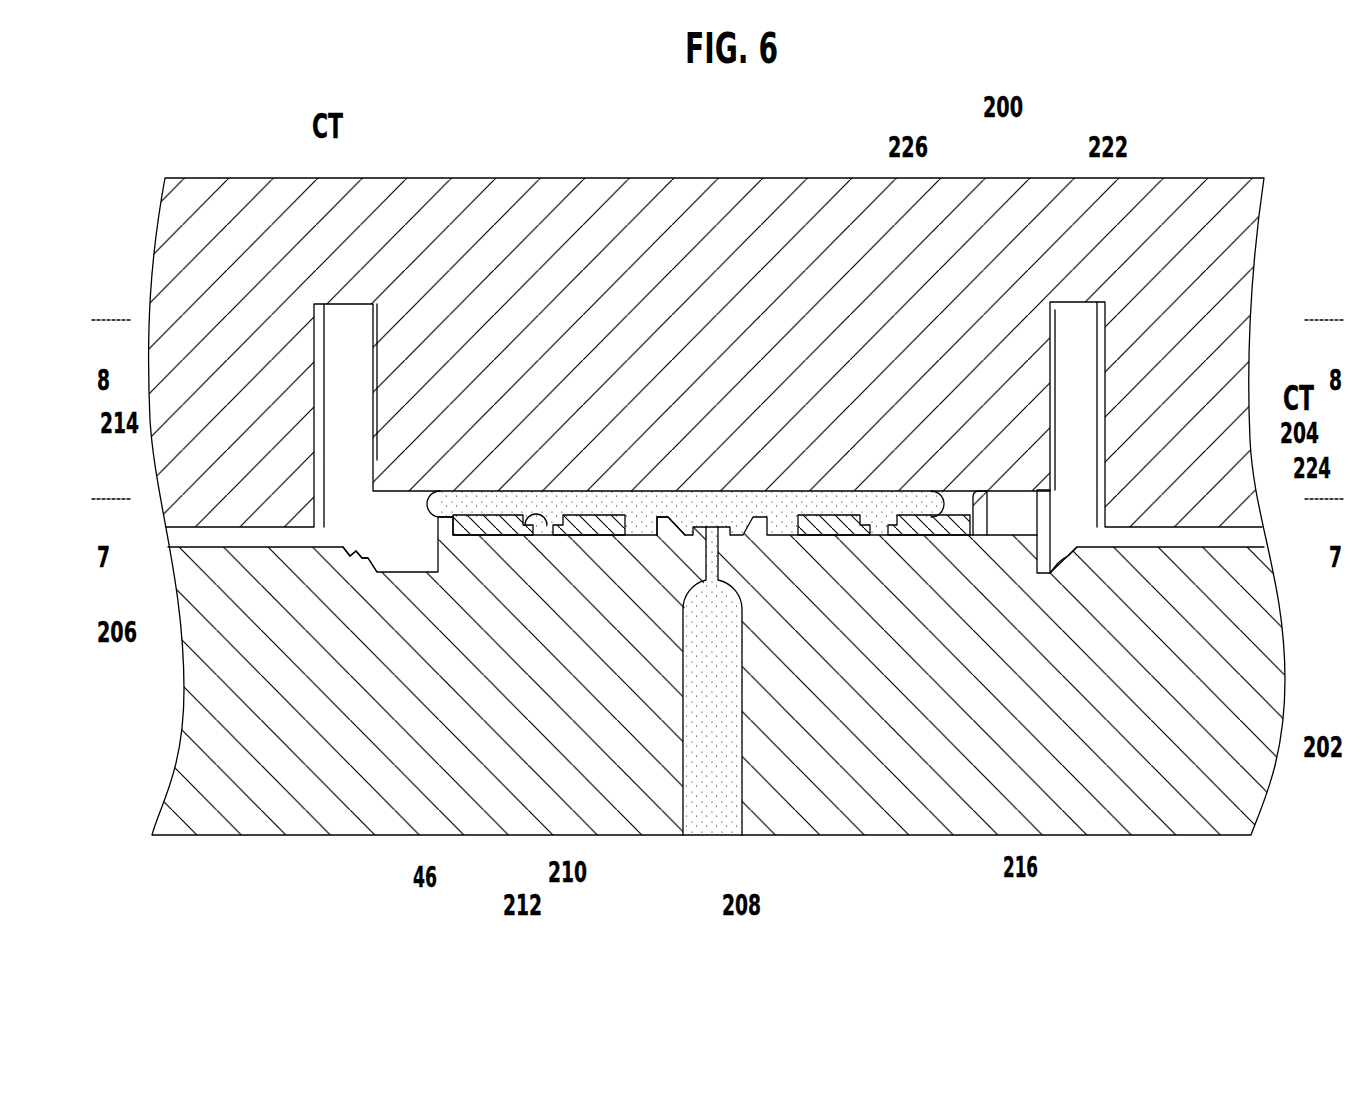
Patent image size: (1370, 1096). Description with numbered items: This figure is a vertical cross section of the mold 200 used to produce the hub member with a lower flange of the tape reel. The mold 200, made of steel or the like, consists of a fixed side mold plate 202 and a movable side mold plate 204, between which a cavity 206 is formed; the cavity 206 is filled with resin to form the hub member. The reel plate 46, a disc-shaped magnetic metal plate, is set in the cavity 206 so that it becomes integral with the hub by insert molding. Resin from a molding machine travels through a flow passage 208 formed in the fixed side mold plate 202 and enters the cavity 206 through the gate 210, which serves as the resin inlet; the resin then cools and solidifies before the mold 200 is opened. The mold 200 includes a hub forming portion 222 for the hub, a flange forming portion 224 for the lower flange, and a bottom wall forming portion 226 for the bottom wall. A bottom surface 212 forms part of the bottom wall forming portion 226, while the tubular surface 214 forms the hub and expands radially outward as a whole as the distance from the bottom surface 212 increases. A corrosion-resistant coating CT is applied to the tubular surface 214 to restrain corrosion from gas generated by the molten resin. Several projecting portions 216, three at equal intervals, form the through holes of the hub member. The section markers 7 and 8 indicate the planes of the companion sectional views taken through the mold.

The mold 200 is at (974, 150).
The fixed side mold plate 202 is at (1268, 722).
The movable side mold plate 204 is at (1245, 430).
The cavity 206 is at (359, 552).
The flow passage 208 is at (730, 837).
The gate 210 is at (672, 560).
The bottom surface 212 is at (525, 522).
The tubular surface 214 is at (322, 427).
The projecting portion 216 is at (1015, 525).
The hub forming portion 222 is at (1076, 319).
The flange forming portion 224 is at (1200, 526).
The bottom wall forming portion 226 is at (961, 495).
The reel plate 46 is at (490, 535).
The corrosion-resistant coating CT is at (1282, 400).
The section line 7 is at (1335, 518).
The section line 8 is at (1335, 338).